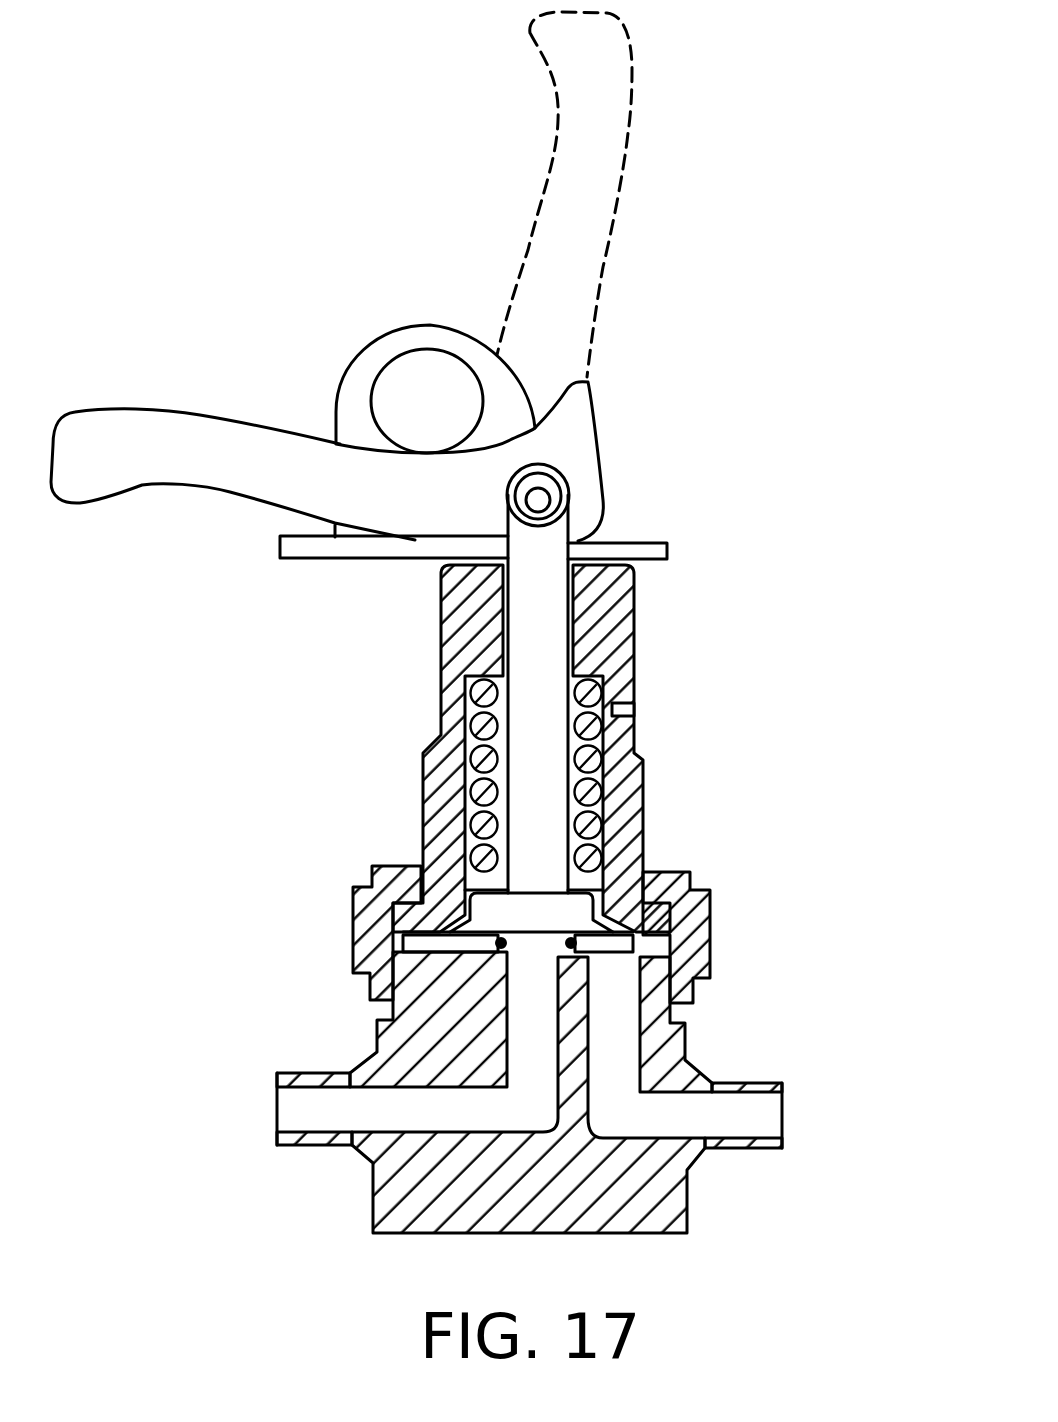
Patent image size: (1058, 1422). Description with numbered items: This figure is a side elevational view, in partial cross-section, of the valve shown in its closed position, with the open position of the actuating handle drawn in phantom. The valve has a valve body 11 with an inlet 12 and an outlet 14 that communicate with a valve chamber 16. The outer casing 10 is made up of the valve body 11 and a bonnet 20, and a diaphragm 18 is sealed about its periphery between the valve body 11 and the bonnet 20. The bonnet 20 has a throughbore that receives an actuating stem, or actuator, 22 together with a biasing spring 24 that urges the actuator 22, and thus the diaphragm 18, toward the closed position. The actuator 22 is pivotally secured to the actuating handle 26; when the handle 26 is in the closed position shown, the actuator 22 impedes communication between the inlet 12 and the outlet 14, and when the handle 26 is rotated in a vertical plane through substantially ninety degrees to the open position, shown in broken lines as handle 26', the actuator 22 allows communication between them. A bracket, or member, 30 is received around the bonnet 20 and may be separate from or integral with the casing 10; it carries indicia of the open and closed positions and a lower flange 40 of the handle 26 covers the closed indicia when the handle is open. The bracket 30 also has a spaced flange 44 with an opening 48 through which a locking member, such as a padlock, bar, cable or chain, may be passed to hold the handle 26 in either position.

The outer casing 10 is at (406, 803).
The valve body 11 is at (683, 1067).
The inlet 12 is at (262, 1117).
The outlet 14 is at (800, 1113).
The valve chamber 16 is at (352, 957).
The diaphragm 18 is at (653, 920).
The bonnet 20 is at (613, 617).
The actuating stem 22 is at (537, 598).
The biasing spring 24 is at (627, 757).
The actuating handle 26 is at (233, 442).
The handle in open position 26' is at (618, 194).
The bracket 30 is at (308, 548).
The lower flange 40 is at (587, 427).
The flange 44 is at (428, 337).
The opening 48 is at (403, 382).